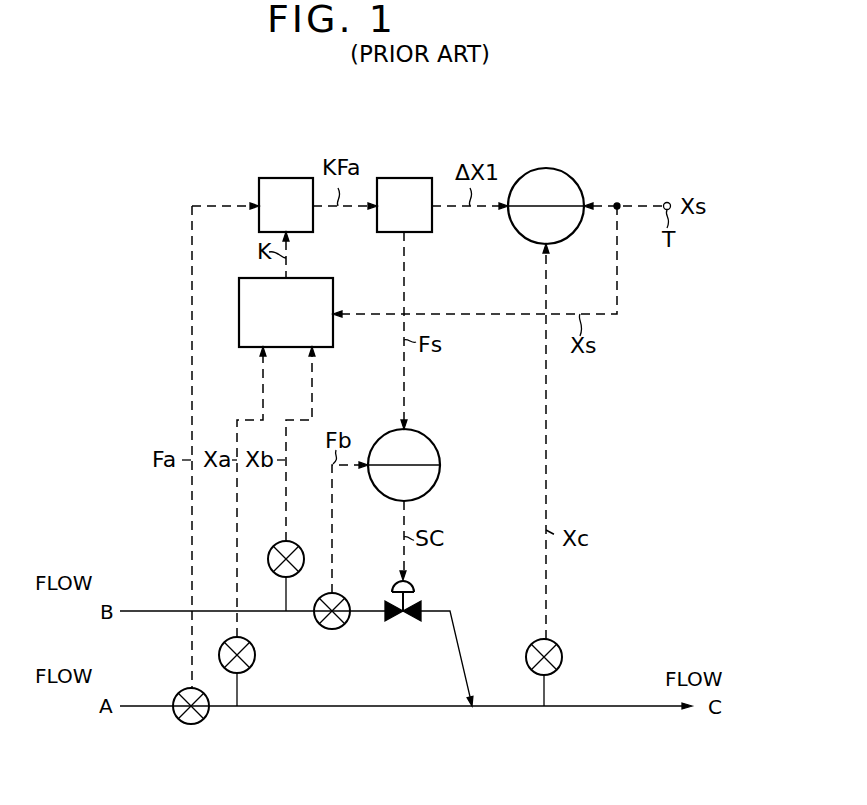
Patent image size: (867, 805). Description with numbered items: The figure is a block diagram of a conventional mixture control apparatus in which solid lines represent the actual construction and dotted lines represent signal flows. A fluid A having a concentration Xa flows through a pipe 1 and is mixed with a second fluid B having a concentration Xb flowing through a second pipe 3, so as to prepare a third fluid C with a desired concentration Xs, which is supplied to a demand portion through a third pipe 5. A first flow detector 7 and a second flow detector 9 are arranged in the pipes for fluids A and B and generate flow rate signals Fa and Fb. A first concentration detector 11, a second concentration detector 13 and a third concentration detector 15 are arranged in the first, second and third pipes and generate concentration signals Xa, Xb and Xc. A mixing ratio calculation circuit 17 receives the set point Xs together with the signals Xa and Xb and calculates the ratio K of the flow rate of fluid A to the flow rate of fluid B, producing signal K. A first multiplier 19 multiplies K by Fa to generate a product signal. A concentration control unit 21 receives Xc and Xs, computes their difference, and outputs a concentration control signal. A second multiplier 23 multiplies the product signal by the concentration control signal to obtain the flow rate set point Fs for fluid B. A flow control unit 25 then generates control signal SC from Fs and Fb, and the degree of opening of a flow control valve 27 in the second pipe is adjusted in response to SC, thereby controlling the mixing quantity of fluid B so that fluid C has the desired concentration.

The pipe 1 is at (313, 713).
The second pipe 3 is at (208, 618).
The third pipe 5 is at (605, 714).
The first flow detector 7 is at (203, 720).
The second flow detector 9 is at (342, 626).
The first concentration detector 11 is at (255, 655).
The second concentration detector 13 is at (297, 546).
The third concentration detector 15 is at (562, 651).
The mixing ratio calculation circuit 17 is at (300, 278).
The first multiplier 19 is at (285, 178).
The concentration control unit 21 is at (565, 183).
The second multiplier 23 is at (404, 178).
The flow control unit 25 is at (415, 432).
The flow control valve 27 is at (405, 622).